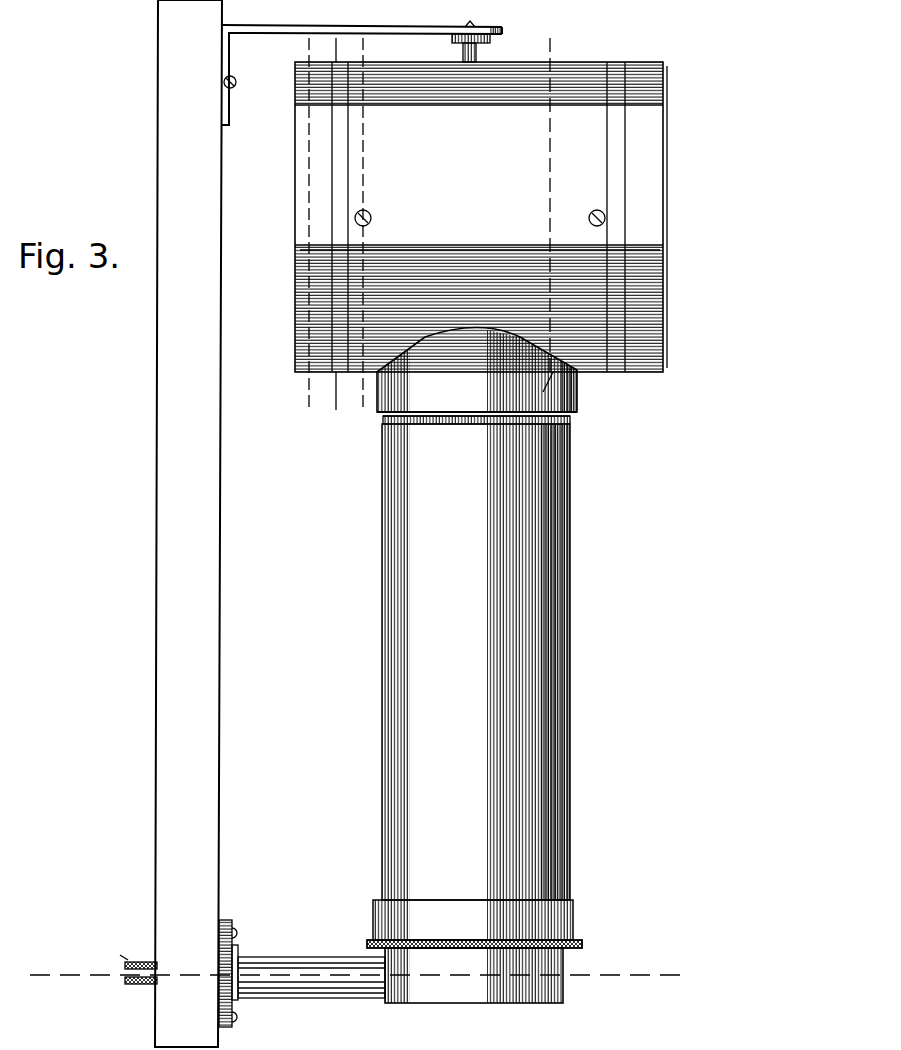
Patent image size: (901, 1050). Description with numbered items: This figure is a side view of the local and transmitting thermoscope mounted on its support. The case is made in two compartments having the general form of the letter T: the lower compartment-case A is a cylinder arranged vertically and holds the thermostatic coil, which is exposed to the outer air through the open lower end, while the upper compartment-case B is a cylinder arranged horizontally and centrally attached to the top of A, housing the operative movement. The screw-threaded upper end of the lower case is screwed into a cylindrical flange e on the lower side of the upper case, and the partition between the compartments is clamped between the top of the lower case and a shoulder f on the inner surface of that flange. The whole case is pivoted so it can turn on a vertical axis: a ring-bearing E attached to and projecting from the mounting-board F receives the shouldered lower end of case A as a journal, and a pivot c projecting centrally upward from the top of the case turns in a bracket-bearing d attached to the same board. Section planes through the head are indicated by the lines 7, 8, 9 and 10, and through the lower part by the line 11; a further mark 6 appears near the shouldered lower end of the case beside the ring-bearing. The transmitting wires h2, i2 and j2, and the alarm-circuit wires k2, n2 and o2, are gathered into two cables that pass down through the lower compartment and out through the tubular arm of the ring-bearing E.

The support or mounting-board F is at (188, 523).
The bracket-bearing d is at (362, 64).
The pivot c is at (471, 48).
The upper compartment-case B is at (481, 217).
The line 7 7 is at (557, 205).
The line 8 8 is at (367, 228).
The line 9 9 is at (340, 231).
The line 10 10 is at (315, 229).
The cylindrical flange e is at (477, 376).
The shoulder f is at (545, 383).
The lower compartment-case A is at (476, 662).
The rim / section line 6 is at (475, 938).
The ring-bearing E is at (391, 973).
The line 11 11 is at (345, 976).
The return or battery wire j2 is at (126, 962).
The increasing-temperature wire h2 is at (128, 962).
The decreasing-temperature wire i2 is at (125, 965).
The increasing-temperature-alarm-circuit wire n2 is at (125, 980).
The battery or return wire of the alarm-circuits k2 is at (125, 982).
The decreasing-temperature-alarm-circuit wire o2 is at (128, 984).